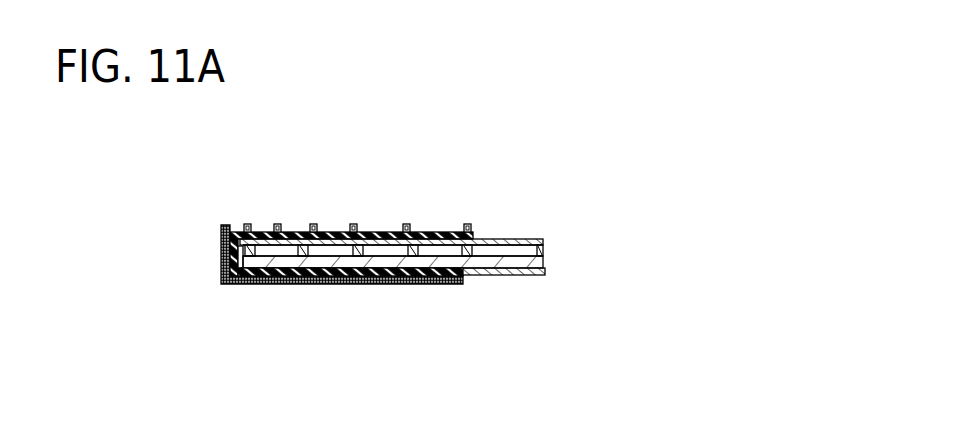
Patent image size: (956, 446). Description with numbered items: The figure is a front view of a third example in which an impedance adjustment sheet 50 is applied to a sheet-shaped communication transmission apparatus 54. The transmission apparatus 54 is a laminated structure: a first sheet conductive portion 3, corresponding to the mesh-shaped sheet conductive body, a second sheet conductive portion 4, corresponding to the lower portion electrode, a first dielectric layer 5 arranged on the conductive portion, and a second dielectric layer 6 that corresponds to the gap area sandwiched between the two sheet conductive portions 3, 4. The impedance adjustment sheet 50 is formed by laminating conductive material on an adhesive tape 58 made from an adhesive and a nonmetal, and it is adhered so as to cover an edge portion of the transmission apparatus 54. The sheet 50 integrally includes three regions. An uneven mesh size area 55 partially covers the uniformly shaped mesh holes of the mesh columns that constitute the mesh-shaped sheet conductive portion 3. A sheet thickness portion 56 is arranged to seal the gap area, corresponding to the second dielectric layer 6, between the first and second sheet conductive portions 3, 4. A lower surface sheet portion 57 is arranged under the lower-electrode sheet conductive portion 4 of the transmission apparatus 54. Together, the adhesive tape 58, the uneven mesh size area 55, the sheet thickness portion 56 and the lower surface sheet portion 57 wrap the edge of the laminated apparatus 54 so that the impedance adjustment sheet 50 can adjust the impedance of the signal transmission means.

The impedance adjustment sheet 50 is at (150, 282).
The communication transmission apparatus 54 is at (499, 187).
The uneven mesh size area 55 is at (313, 231).
The sheet thickness portion 56 is at (224, 248).
The lower surface sheet portion 57 is at (230, 285).
The adhesive tape 58 is at (433, 238).
The first dielectric layer 5 is at (536, 239).
The second sheet conductive portion 4 is at (541, 250).
The second dielectric layer 6 is at (539, 261).
The first sheet conductive portion 3 is at (545, 272).